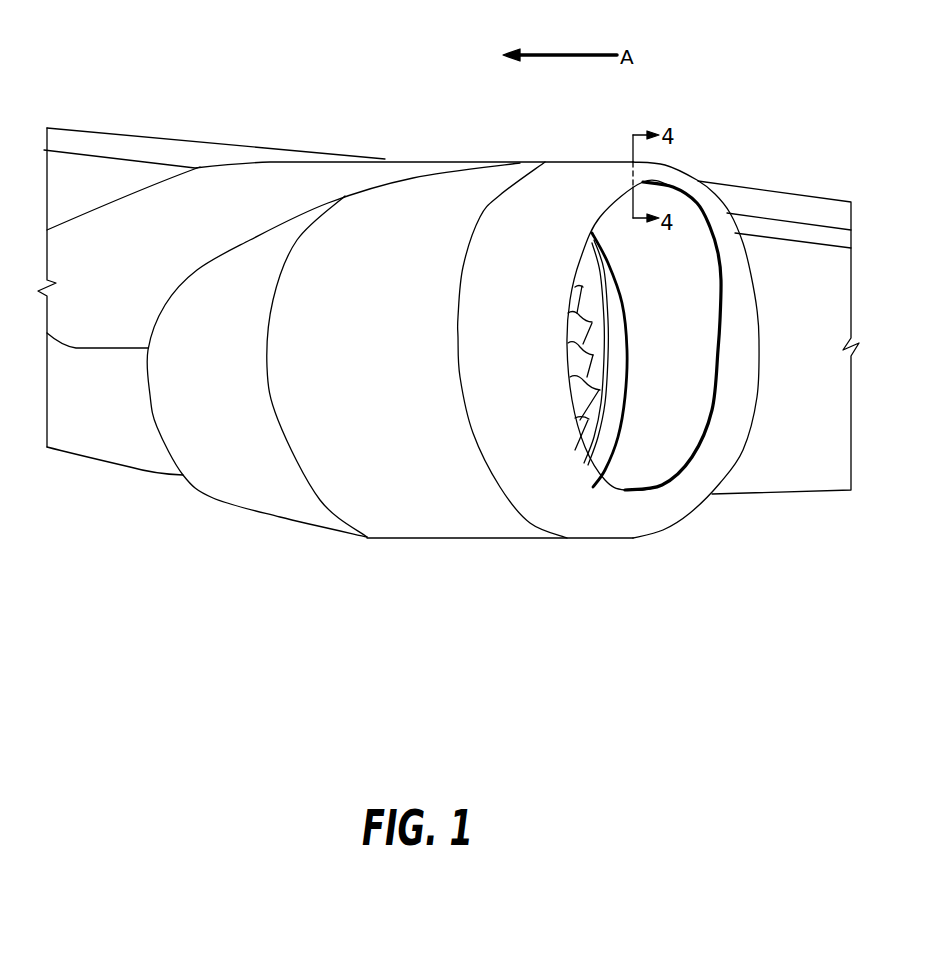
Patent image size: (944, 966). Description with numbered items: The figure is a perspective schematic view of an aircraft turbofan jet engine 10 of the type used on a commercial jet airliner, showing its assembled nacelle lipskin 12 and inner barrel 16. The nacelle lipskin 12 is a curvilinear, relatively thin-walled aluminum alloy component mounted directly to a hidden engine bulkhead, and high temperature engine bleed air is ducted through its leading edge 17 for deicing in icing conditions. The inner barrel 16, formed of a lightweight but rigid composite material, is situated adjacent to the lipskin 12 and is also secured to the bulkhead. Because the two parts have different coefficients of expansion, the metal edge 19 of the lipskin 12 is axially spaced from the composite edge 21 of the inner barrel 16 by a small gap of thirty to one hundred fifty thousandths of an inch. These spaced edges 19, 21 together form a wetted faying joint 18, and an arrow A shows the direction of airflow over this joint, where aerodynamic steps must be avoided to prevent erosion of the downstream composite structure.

The aircraft turbofan jet engine 10 is at (607, 121).
The nacelle lipskin 12 is at (564, 175).
The inner barrel 16 is at (684, 366).
The leading edge 17 is at (750, 422).
The wetted faying joint 18 is at (723, 340).
The edge of the lipskin 19 is at (698, 276).
The edge of the inner barrel 21 is at (732, 280).